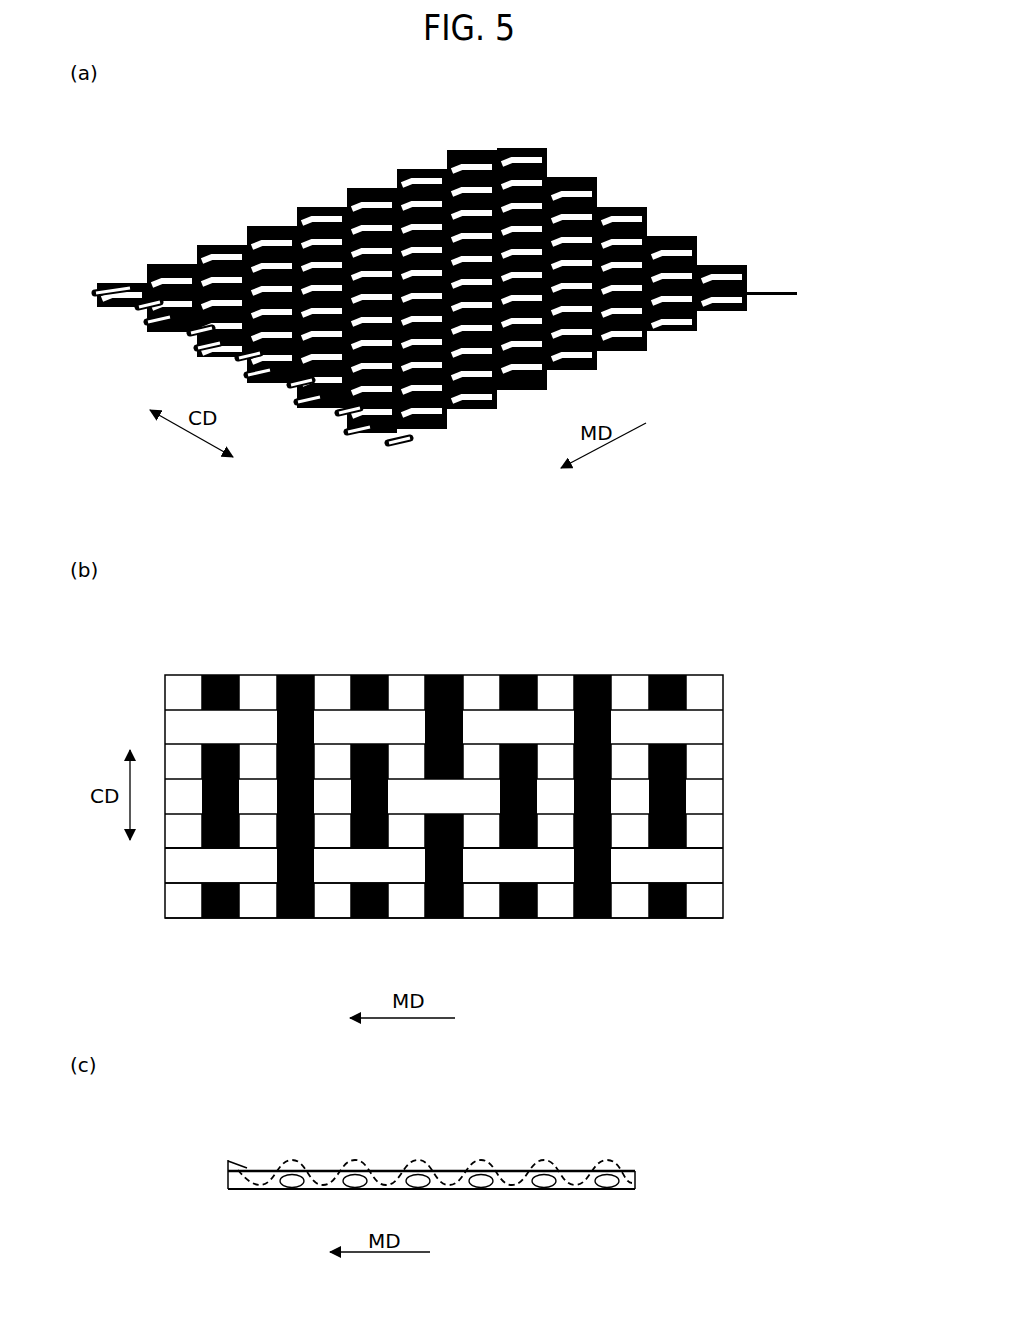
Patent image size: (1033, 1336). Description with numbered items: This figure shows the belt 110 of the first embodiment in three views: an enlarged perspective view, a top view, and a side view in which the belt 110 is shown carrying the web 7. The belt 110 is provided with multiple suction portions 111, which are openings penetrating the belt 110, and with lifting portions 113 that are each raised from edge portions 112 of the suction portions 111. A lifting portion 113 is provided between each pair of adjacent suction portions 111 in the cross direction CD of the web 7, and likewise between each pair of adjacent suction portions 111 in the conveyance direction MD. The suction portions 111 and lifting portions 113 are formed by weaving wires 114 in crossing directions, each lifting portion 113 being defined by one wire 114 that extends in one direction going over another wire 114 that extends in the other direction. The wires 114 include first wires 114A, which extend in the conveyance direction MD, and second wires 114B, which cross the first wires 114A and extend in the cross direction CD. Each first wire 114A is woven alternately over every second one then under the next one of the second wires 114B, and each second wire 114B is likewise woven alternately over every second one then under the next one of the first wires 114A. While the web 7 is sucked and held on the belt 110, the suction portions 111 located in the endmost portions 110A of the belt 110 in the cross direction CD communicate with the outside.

The web 7 is at (248, 1168).
The belt 110 is at (318, 145).
The endmost portions of the belt 110A is at (490, 918).
The suction portions 111 is at (447, 158).
The edge portions 112 is at (393, 763).
The lifting portions 113 is at (237, 242).
The wires 114 is at (717, 131).
The first wires 114A is at (623, 166).
The second wires 114B is at (640, 208).